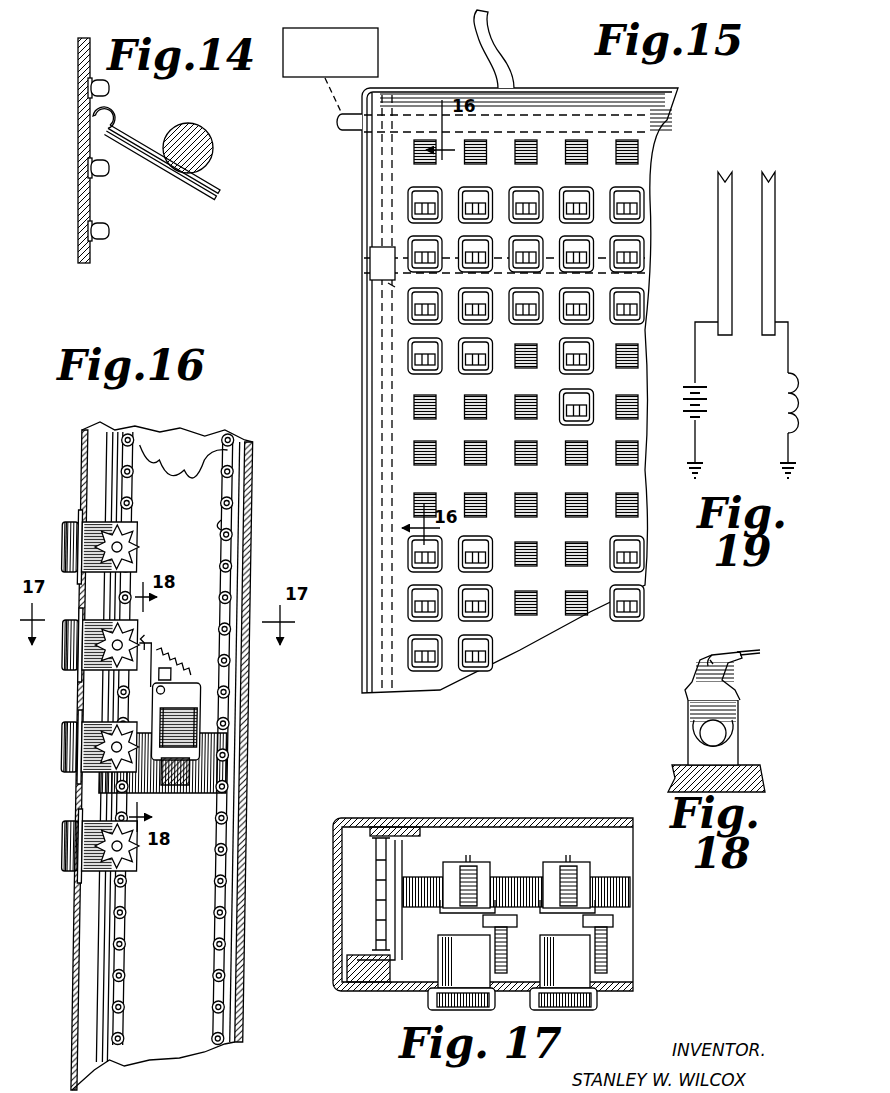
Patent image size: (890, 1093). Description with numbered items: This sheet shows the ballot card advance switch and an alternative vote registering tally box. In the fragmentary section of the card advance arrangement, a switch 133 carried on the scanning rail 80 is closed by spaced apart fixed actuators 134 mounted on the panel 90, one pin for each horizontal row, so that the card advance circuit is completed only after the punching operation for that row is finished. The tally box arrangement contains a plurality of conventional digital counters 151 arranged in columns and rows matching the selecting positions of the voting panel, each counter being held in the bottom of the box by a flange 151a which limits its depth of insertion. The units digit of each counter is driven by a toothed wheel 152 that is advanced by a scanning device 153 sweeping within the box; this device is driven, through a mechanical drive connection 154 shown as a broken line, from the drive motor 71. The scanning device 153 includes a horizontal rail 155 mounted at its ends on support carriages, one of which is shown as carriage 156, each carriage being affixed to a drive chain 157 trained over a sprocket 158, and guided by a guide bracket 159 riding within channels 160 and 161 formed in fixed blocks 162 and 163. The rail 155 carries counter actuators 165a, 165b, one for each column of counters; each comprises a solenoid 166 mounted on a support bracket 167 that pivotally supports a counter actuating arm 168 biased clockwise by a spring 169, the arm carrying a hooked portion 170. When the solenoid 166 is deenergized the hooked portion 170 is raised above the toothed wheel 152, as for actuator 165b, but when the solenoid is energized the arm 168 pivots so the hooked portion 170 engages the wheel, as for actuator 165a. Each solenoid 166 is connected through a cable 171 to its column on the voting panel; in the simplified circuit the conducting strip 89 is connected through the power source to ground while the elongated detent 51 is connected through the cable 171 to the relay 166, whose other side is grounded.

In FIG. 19, the elongated detent 51 is at (776, 207).
In FIG. 15, the drive motor 71 is at (349, 17).
In FIG. 14, the scanning rail 80 is at (188, 123).
In FIG. 19, the conducting strip 89 is at (720, 193).
In FIG. 14, the panel 90 is at (78, 138).
In FIG. 14, the switch 133 is at (142, 176).
In FIG. 14, the fixed actuators 134 is at (110, 90).
In FIG. 15, the digital counters 151 is at (570, 190).
In FIG. 16, the digital counters 151 is at (62, 528).
In FIG. 17, the digital counters 151 is at (476, 968).
In FIG. 16, the flange 151a is at (80, 513).
In FIG. 17, the flange 151a is at (436, 1000).
In FIG. 16, the toothed wheel 152 is at (135, 535).
In FIG. 17, the toothed wheel 152 is at (607, 950).
In FIG. 15, the scanning device 153 is at (370, 258).
In FIG. 16, the scanning device 153 is at (185, 800).
In FIG. 17, the scanning device 153 is at (528, 876).
In FIG. 15, the drive connection 154 is at (330, 98).
In FIG. 15, the horizontal rail 155 is at (392, 286).
In FIG. 18, the horizontal rail 155 is at (752, 770).
In FIG. 16, the horizontal rail 155 is at (185, 772).
In FIG. 17, the horizontal rail 155 is at (420, 878).
In FIG. 15, the support carriage 156 is at (370, 272).
In FIG. 16, the support carriage 156 is at (222, 752).
In FIG. 15, the drive chain 157 is at (382, 329).
In FIG. 16, the drive chain 157 is at (215, 520).
In FIG. 16, the sprocket 158 is at (195, 465).
In FIG. 17, the guide bracket 159 is at (396, 926).
In FIG. 15, the channel 160 is at (360, 191).
In FIG. 16, the channel 160 is at (255, 562).
In FIG. 17, the channel 160 is at (483, 818).
In FIG. 17, the channel 161 is at (370, 992).
In FIG. 16, the fixed block 162 is at (240, 545).
In FIG. 17, the fixed block 162 is at (398, 828).
In FIG. 16, the fixed block 163 is at (88, 990).
In FIG. 17, the fixed block 163 is at (352, 992).
In FIG. 17, the counter actuator 165a is at (488, 845).
In FIG. 17, the counter actuator 165b is at (580, 850).
In FIG. 19, the solenoid 166 is at (786, 400).
In FIG. 18, the solenoid 166 is at (692, 740).
In FIG. 16, the solenoid 166 is at (185, 725).
In FIG. 18, the support bracket 167 is at (738, 748).
In FIG. 16, the support bracket 167 is at (213, 690).
In FIG. 17, the support bracket 167 is at (465, 862).
In FIG. 18, the counter actuating arm 168 is at (740, 673).
In FIG. 16, the counter actuating arm 168 is at (153, 650).
In FIG. 17, the counter actuating arm 168 is at (440, 950).
In FIG. 18, the spring 169 is at (712, 655).
In FIG. 16, the spring 169 is at (160, 663).
In FIG. 17, the spring 169 is at (470, 880).
In FIG. 18, the hooked portion 170 is at (775, 630).
In FIG. 16, the hooked portion 170 is at (148, 640).
In FIG. 17, the hooked portion 170 is at (505, 918).
In FIG. 15, the cable 171 is at (530, 28).
In FIG. 19, the cable 171 is at (787, 357).